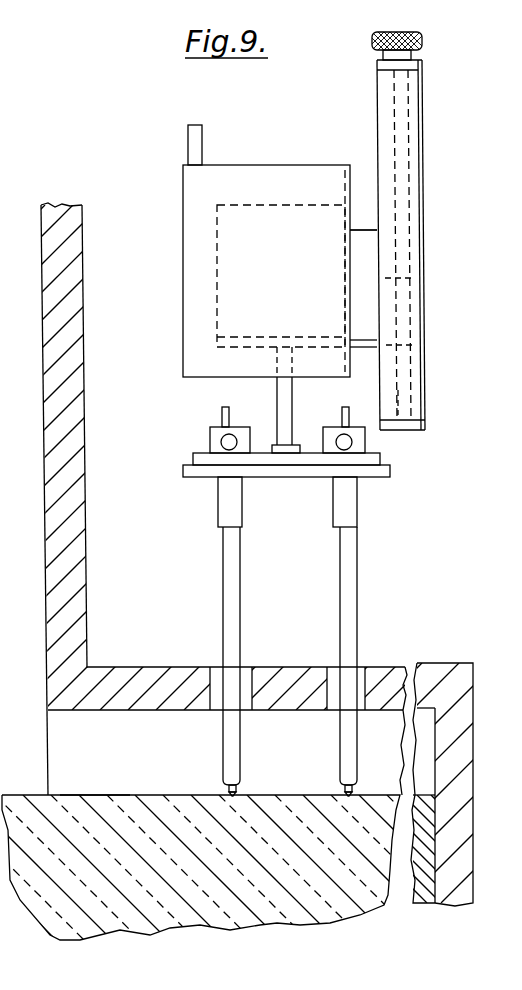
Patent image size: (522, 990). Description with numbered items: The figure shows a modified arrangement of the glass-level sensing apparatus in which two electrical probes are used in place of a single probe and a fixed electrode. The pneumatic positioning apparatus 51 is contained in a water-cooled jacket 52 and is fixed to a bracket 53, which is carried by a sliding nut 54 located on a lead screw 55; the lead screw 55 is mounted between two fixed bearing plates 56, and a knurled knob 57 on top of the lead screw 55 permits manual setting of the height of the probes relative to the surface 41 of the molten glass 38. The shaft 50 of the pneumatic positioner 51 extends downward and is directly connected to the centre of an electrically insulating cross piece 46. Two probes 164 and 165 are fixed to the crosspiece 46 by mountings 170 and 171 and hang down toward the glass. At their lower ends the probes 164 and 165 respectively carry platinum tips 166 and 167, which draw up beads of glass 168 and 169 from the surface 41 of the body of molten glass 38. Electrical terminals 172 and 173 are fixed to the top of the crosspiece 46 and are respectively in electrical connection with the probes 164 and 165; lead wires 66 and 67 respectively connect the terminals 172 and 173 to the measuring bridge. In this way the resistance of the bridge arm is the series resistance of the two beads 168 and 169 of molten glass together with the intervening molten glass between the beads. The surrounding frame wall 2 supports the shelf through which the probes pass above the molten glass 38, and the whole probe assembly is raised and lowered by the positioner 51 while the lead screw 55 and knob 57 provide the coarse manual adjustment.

The frame wall 2 is at (88, 450).
The molten glass 38 is at (152, 930).
The surface of the molten glass 41 is at (86, 795).
The electrically insulating cross piece 46 is at (365, 472).
The shaft of the pneumatic positioner 50 is at (288, 402).
The pneumatic positioning apparatus 51 is at (243, 200).
The water-cooled jacket 52 is at (303, 172).
The bracket 53 is at (367, 240).
The sliding nut 54 is at (387, 303).
The lead screw 55 is at (410, 125).
The fixed bearing plates 56 is at (378, 70).
The knurled knob 57 is at (424, 42).
The lead wire 66 is at (229, 417).
The lead wire 67 is at (349, 417).
The probe 164 is at (229, 582).
The probe 165 is at (345, 583).
The platinum tip 166 is at (238, 793).
The platinum tip 167 is at (352, 793).
The bead of glass 168 is at (228, 793).
The bead of glass 169 is at (344, 793).
The mounting 170 is at (228, 508).
The mounting 171 is at (340, 508).
The electrical terminal 172 is at (212, 440).
The electrical terminal 173 is at (360, 440).